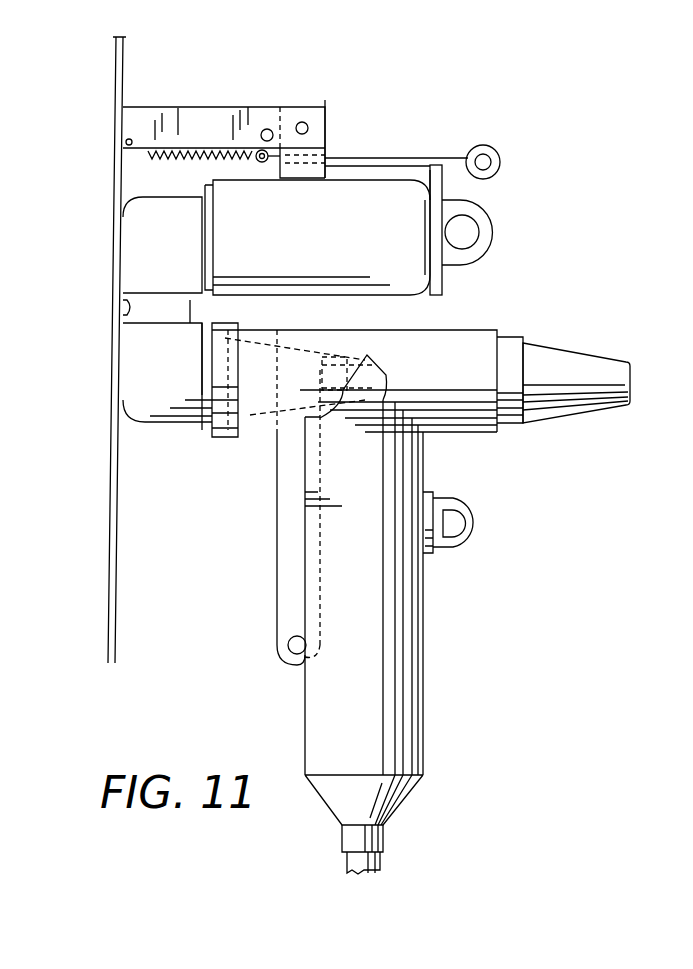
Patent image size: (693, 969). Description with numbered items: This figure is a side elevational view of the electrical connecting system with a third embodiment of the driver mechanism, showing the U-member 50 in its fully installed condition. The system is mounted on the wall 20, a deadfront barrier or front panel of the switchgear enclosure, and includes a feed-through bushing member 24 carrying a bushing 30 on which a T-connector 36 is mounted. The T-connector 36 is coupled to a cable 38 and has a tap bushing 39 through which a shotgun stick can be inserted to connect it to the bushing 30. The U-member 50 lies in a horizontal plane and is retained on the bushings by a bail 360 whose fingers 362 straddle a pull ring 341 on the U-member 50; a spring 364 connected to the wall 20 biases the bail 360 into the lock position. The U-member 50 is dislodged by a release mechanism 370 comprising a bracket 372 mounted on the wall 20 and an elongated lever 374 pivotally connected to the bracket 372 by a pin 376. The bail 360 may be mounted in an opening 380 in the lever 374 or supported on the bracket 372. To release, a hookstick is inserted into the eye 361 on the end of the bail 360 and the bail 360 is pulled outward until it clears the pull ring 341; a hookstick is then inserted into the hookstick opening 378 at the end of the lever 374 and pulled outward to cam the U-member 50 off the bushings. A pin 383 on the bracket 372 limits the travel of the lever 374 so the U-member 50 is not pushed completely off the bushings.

The wall 20 is at (110, 573).
The feed-through bushing member 24 is at (128, 248).
The bushing 30 is at (266, 425).
The T-connector 36 is at (424, 652).
The cable 38 is at (382, 860).
The tap bushing 39 is at (568, 356).
The U-member 50 is at (427, 174).
The pull ring 341 is at (493, 231).
The bail 360 is at (400, 158).
The eye 361 is at (500, 160).
The fingers 362 is at (443, 284).
The spring 364 is at (200, 158).
The release mechanism 370 is at (325, 105).
The bracket 372 is at (188, 107).
The lever 374 is at (276, 558).
The pin 376 is at (302, 122).
The hookstick opening 378 is at (286, 650).
The opening 380 is at (335, 153).
The pin 383 is at (267, 129).